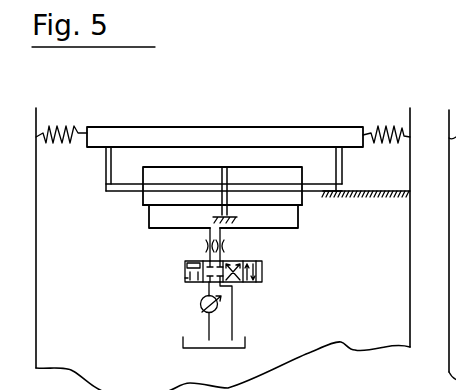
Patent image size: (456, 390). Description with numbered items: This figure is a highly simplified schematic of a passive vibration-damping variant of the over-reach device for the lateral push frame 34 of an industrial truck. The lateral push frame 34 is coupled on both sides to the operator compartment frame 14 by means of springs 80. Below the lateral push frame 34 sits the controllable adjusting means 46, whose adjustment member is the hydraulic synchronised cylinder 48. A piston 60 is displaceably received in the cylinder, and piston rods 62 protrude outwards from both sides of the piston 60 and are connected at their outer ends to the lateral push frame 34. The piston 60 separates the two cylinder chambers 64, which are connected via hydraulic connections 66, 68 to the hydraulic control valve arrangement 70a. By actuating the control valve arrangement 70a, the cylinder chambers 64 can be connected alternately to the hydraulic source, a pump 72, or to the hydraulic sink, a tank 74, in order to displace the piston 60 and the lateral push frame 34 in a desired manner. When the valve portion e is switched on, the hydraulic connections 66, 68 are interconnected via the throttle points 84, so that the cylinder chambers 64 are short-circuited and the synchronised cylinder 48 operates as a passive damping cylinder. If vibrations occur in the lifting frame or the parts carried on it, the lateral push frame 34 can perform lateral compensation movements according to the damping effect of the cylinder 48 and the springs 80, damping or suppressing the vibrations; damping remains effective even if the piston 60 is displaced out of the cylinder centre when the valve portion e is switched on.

The operator compartment frame 14 is at (36, 111).
The lateral push frame 34 is at (243, 133).
The adjusting means 46 is at (96, 169).
The hydraulic synchronised cylinder 48 is at (141, 205).
The piston 60 is at (228, 174).
The piston rods 62 is at (123, 187).
The cylinder chambers 64 is at (180, 173).
The hydraulic connection 66 is at (149, 208).
The hydraulic connection 68 is at (298, 212).
The hydraulic control valve arrangement 70a is at (271, 282).
The hydraulic source (pump) 72 is at (201, 309).
The hydraulic sink (tank) 74 is at (238, 337).
The springs 80 is at (58, 128).
The throttle points 84 is at (203, 252).
The valve portion e is at (185, 278).